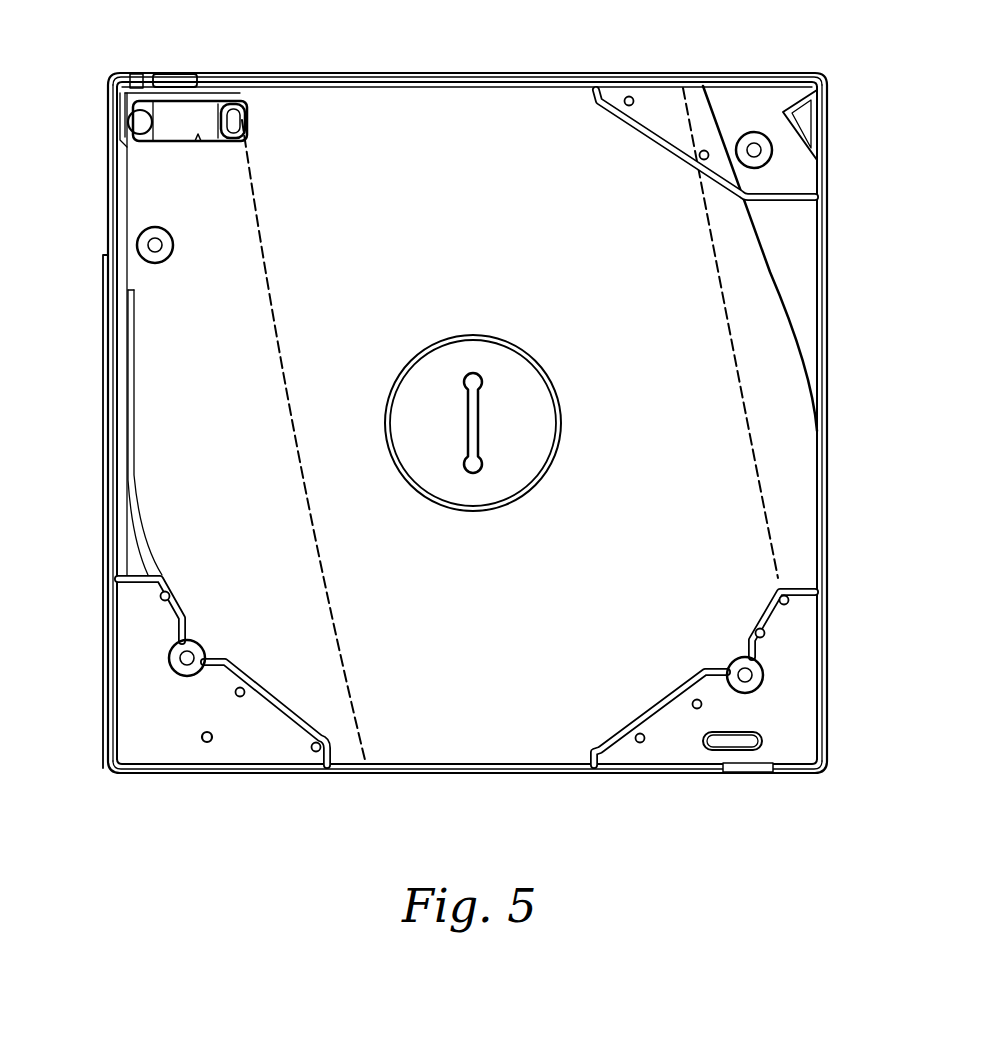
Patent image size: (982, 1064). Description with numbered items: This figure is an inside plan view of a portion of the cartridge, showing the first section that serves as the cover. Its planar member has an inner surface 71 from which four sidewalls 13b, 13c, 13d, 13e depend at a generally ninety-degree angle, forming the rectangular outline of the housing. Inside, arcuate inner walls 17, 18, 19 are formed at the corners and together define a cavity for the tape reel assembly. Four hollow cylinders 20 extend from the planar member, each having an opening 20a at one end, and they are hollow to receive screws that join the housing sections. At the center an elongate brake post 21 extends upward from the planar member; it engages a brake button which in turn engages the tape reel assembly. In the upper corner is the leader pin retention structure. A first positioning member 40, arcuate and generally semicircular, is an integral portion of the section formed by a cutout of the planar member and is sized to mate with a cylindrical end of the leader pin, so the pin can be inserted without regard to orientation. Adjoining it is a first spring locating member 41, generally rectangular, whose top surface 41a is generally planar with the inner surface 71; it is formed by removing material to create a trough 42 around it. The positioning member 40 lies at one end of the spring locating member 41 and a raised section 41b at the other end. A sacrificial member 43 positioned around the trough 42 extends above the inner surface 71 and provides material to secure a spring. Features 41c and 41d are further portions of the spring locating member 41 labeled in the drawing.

The sidewall 13b is at (507, 72).
The sidewall 13c is at (106, 492).
The sidewall 13d is at (460, 775).
The sidewall 13e is at (828, 467).
The arcuate inner wall 17 is at (671, 143).
The arcuate inner wall 18 is at (675, 705).
The arcuate inner wall 19 is at (288, 710).
The cylinder 20 is at (148, 240).
The opening 20a is at (150, 250).
The brake post 21 is at (468, 420).
The first positioning member 40 is at (160, 140).
The first spring locating member 41 is at (209, 113).
The top surface 41a is at (200, 117).
The raised section 41b is at (236, 95).
The lower edge of lock member 41c is at (184, 143).
The stopper portion of lock member 41d is at (181, 102).
The trough 42 is at (198, 140).
The sacrificial member 43 is at (248, 118).
The inner surface 71 is at (405, 120).